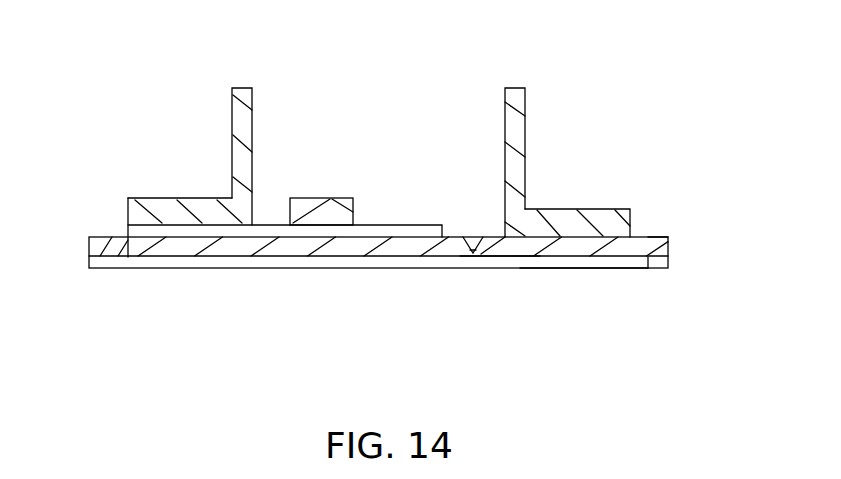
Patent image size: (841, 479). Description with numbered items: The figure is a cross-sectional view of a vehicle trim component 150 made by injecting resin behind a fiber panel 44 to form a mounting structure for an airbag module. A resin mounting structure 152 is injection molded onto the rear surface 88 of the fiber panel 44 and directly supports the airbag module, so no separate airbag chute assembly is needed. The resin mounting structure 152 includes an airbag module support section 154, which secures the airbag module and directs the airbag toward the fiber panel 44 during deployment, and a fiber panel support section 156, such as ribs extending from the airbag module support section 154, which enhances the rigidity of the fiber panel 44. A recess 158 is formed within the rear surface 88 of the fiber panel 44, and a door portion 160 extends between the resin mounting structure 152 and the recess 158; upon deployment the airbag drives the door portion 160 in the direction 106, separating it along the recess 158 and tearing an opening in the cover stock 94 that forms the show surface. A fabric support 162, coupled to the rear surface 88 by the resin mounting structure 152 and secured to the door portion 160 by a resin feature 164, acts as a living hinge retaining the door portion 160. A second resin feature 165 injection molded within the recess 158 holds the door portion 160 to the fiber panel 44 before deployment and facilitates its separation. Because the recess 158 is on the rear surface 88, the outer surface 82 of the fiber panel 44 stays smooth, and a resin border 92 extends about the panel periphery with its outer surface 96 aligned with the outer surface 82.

The fiber panel 44 is at (180, 247).
The outer surface of the fiber panel 82 is at (500, 258).
The rear surface of the fiber panel 88 is at (573, 235).
The resin border 92 is at (650, 242).
The cover stock 94 is at (575, 268).
The outer surface of the resin border 96 is at (648, 260).
The direction 106 is at (439, 300).
The vehicle trim component 150 is at (615, 128).
The resin mounting structure 152 is at (465, 132).
The airbag module support section 154 is at (252, 130).
The fiber panel support section 156 is at (163, 198).
The recess 158 is at (475, 236).
The door portion 160 is at (337, 289).
The fabric support 162 is at (143, 228).
The resin feature 164 is at (323, 198).
The second resin feature 165 is at (473, 250).